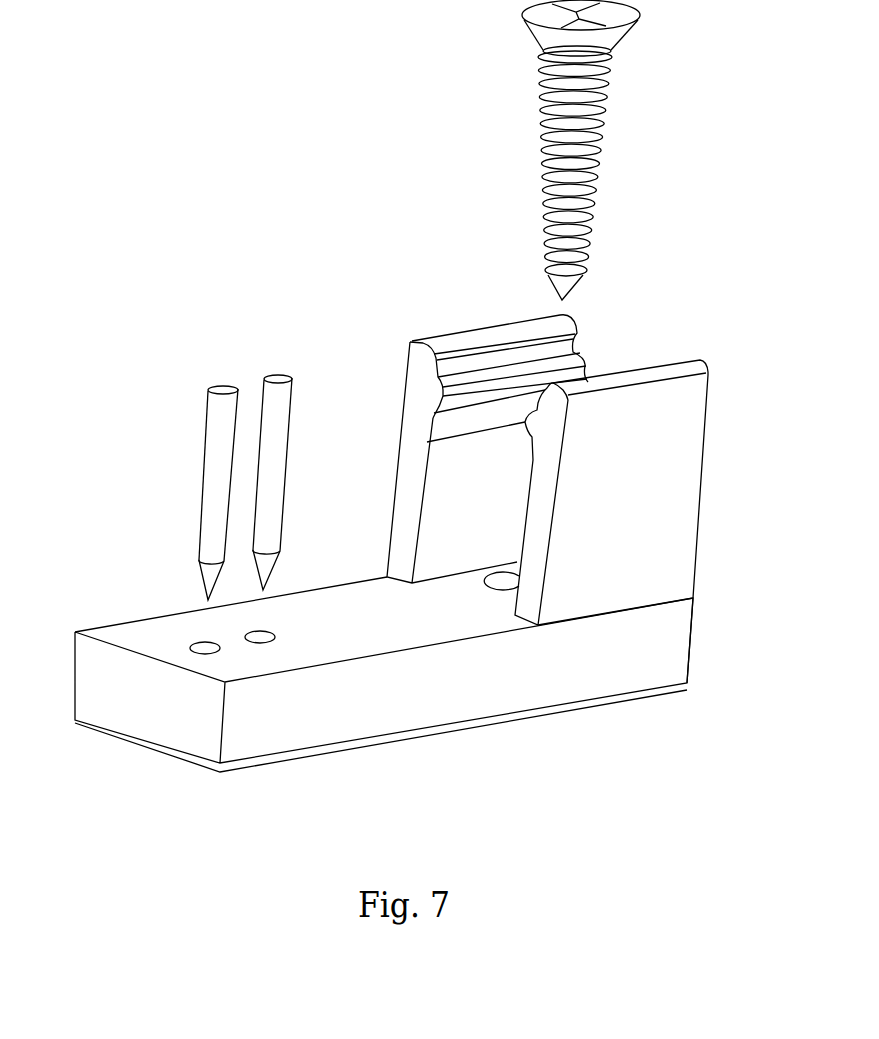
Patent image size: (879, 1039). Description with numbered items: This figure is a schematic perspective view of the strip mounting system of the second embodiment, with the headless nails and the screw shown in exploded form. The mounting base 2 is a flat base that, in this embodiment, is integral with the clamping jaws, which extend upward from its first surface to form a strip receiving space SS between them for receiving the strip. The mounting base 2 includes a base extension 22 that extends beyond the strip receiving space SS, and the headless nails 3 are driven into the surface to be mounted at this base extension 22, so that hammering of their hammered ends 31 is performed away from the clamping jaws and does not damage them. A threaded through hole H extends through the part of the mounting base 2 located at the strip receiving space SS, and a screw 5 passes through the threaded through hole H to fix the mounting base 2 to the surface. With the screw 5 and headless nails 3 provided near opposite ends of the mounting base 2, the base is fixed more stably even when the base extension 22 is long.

The screw 5 is at (618, 143).
The hammered end 31 is at (220, 388).
The headless nail 3 is at (188, 456).
The mounting base 2 is at (422, 570).
The base extension 22 is at (145, 727).
The threaded through hole H is at (507, 588).
The strip receiving space SS is at (491, 500).